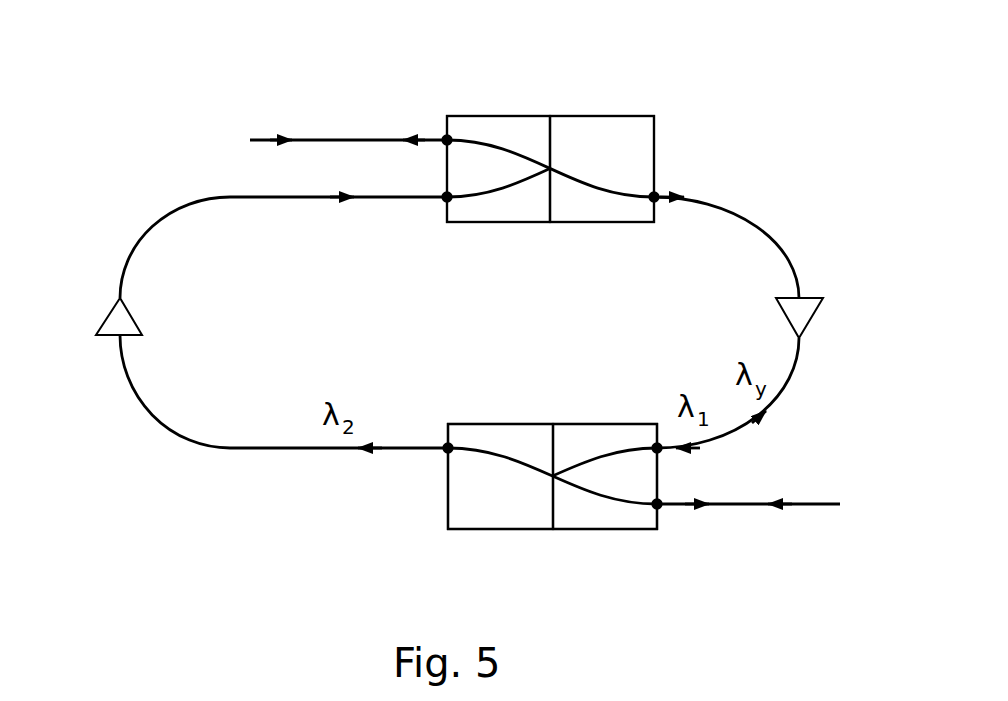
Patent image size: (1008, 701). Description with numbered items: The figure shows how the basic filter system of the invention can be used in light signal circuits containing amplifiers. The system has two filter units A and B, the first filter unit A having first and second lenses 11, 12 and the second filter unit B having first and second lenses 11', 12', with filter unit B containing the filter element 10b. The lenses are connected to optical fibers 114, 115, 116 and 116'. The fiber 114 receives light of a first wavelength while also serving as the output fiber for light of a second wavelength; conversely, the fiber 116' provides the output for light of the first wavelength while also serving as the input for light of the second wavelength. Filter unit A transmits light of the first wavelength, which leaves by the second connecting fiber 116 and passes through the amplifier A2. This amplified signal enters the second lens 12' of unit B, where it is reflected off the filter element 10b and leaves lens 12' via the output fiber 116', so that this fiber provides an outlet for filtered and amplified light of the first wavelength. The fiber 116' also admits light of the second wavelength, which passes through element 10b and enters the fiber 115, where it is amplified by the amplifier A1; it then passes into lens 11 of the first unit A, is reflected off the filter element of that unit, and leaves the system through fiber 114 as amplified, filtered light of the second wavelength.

The filter unit A is at (568, 105).
The filter unit B is at (567, 412).
The filter element 10b is at (552, 423).
The first lens 11 is at (497, 209).
The second lens 12 is at (626, 200).
The first lens 11' is at (498, 516).
The second lens 12' is at (617, 509).
The optical fiber 114 is at (350, 138).
The optical fiber 115 is at (317, 198).
The second connecting fiber 116 is at (771, 227).
The optical fiber 116' is at (754, 518).
The amplifier A1 is at (120, 298).
The amplifier A2 is at (805, 303).